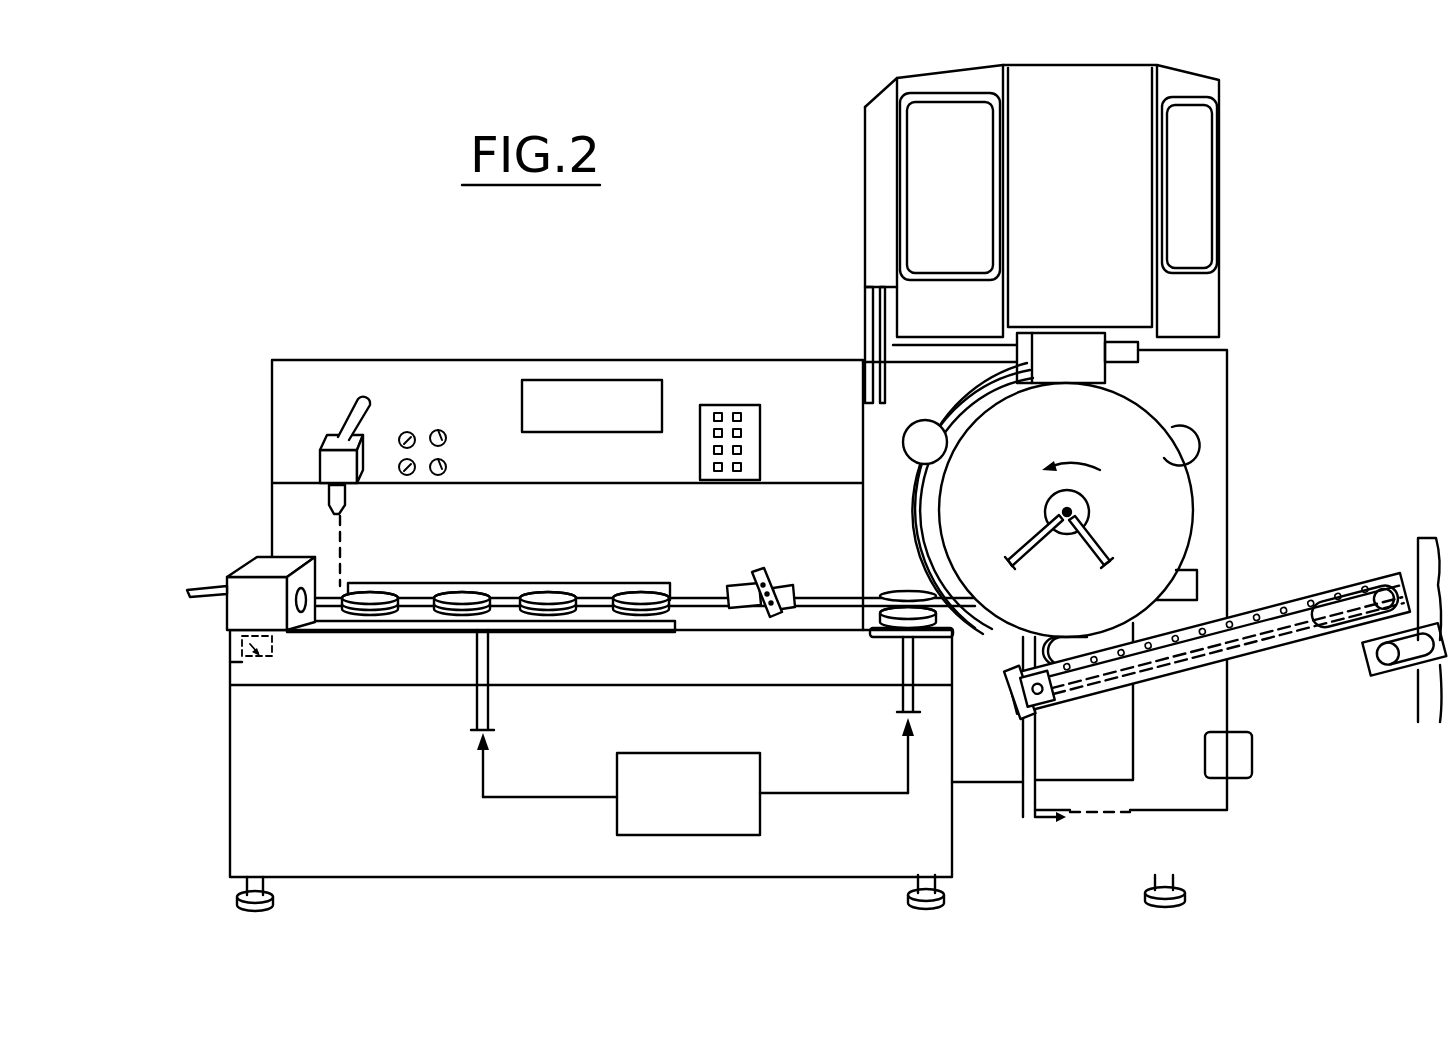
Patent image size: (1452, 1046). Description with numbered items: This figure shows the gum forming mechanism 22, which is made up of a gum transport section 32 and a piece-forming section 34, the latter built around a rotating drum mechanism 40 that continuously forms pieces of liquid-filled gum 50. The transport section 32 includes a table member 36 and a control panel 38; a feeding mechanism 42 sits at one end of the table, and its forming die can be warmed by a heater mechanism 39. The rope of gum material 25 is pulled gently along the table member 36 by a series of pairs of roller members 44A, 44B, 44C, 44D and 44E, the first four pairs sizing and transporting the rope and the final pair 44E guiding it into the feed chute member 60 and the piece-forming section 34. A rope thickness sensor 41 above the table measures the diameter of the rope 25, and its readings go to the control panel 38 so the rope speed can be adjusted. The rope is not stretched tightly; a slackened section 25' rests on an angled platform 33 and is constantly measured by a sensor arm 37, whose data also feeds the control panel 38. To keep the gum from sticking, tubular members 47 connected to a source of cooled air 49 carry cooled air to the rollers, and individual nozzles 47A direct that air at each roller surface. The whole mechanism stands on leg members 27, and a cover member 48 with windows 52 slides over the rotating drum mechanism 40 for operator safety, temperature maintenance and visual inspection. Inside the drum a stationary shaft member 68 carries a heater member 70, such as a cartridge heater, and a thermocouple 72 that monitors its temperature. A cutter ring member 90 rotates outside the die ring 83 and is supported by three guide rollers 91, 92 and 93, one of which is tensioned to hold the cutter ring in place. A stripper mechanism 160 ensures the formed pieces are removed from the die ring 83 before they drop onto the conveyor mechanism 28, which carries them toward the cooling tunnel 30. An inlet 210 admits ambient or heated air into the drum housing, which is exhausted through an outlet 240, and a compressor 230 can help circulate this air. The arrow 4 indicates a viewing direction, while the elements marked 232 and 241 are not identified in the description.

The direction of view 4 is at (1278, 436).
The gum forming mechanism 22 is at (190, 478).
The rope of gum material 25 is at (197, 562).
The slackened section of the gum rope 25' is at (715, 655).
The leg members 27 is at (274, 898).
The conveyor mechanism 28 is at (1279, 637).
The cooling tunnel 30 is at (1426, 546).
The gum transport section 32 is at (375, 678).
The angled platform 33 is at (736, 584).
The piece-forming section 34 is at (1232, 543).
The table member 36 is at (240, 663).
The sensor arm 37 is at (770, 575).
The control panel 38 is at (512, 362).
The heater mechanism 39 is at (278, 656).
The rotating drum mechanism 40 is at (1187, 494).
The rope thickness sensor 41 is at (322, 442).
The feeding mechanism 42 is at (243, 597).
The roller members 44A is at (366, 590).
The roller members 44B is at (460, 590).
The roller members 44C is at (545, 590).
The roller members 44D is at (640, 590).
The roller members 44E is at (884, 590).
The tubular members 47 is at (577, 632).
The nozzles 47A is at (392, 618).
The cover member 48 is at (1210, 92).
The source of cooled air 49 is at (695, 751).
The pieces of formed gum material 50 is at (1346, 600).
The windows 52 is at (922, 222).
The feed chute member 60 is at (960, 614).
The stationary shaft member 68 is at (1050, 504).
The heater member 70 is at (1085, 503).
The thermocouple 72 is at (1092, 518).
The die ring member 83 is at (966, 521).
The cutter ring member 90 is at (932, 505).
The guide roller 91 is at (925, 428).
The guide roller 92 is at (1183, 430).
The guide roller 93 is at (1065, 647).
The stripper mechanism 160 is at (1200, 587).
The inlet 210 is at (1062, 343).
The compressor 230 is at (1240, 746).
The frame panel 232 is at (1232, 365).
The outlet 240 is at (1053, 601).
The bracket 241 is at (1036, 818).